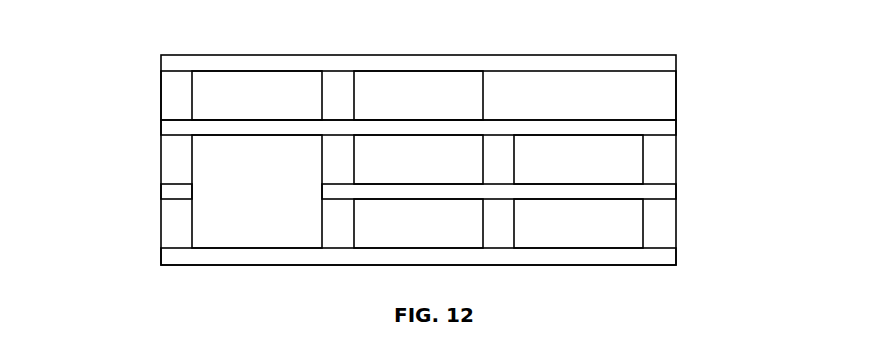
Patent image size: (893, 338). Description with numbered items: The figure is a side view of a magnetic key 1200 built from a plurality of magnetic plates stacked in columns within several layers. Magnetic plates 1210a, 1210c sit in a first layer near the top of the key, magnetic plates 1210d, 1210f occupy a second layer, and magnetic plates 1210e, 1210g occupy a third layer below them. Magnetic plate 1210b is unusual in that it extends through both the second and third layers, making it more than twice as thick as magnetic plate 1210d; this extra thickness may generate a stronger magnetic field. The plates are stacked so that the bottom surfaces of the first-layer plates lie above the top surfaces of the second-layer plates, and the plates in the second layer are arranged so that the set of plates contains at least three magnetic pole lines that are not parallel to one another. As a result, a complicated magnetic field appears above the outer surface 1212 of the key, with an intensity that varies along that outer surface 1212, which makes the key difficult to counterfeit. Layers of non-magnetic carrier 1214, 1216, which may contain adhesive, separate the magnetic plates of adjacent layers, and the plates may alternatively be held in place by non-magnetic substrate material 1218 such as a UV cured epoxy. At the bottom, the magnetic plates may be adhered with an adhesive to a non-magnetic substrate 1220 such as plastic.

The magnetic key 1200 is at (121, 53).
The outer surface 1212 is at (379, 47).
The non-magnetic substrate material 1218 is at (676, 94).
The layer of non-magnetic carrier 1214 is at (676, 129).
The layer of non-magnetic carrier 1216 is at (676, 190).
The non-magnetic substrate 1220 is at (676, 257).
The magnetic plate 1210a is at (225, 103).
The magnetic plate 1210b is at (227, 201).
The magnetic plate 1210c is at (437, 104).
The magnetic plate 1210d is at (437, 166).
The magnetic plate 1210e is at (437, 231).
The magnetic plate 1210f is at (553, 167).
The magnetic plate 1210g is at (551, 232).